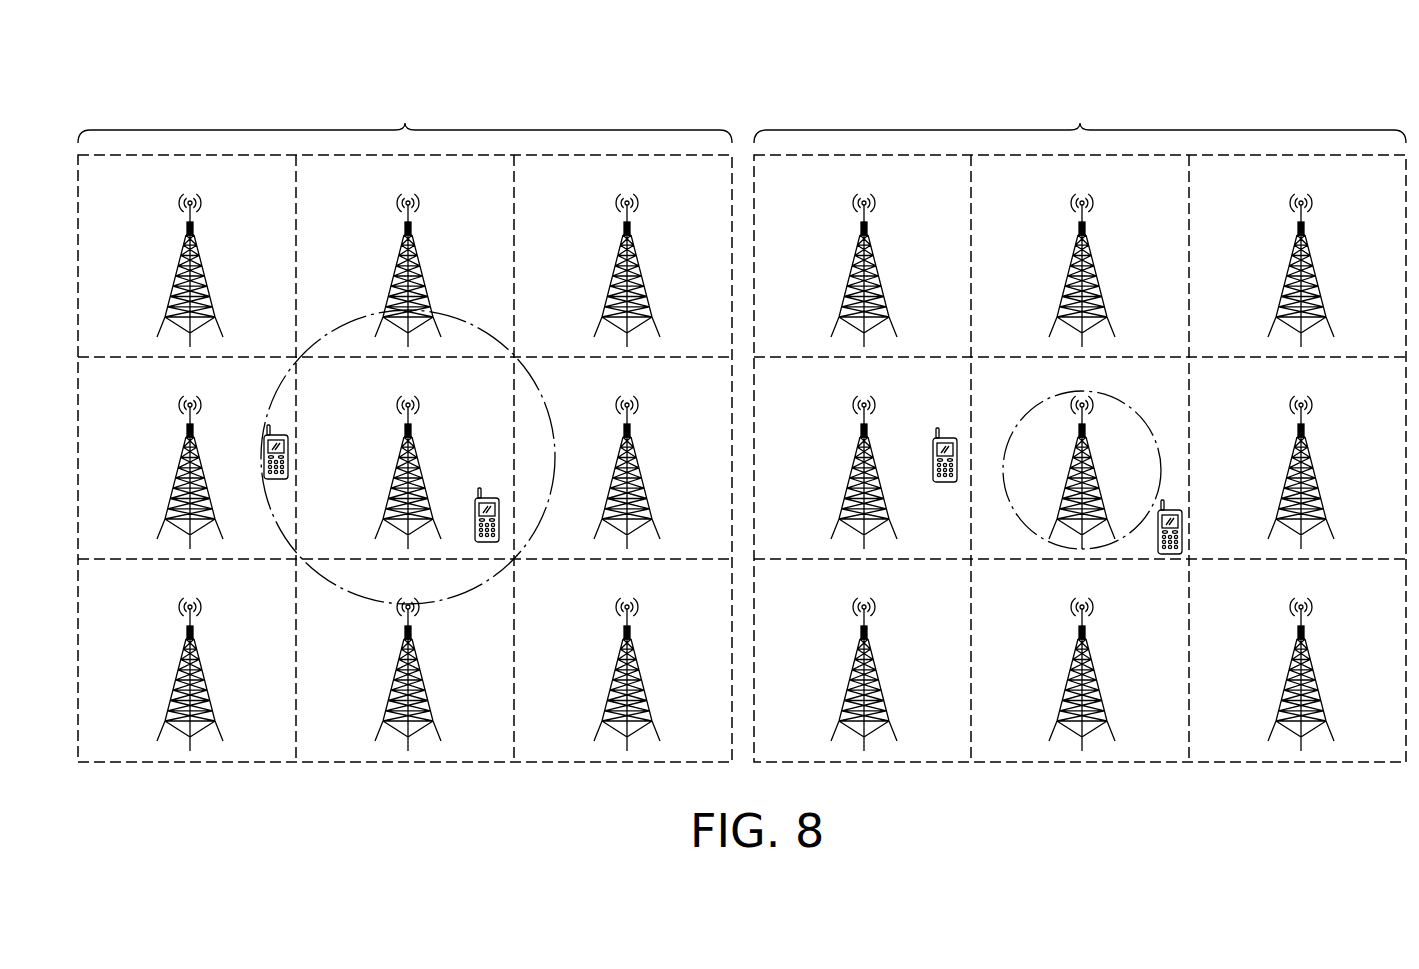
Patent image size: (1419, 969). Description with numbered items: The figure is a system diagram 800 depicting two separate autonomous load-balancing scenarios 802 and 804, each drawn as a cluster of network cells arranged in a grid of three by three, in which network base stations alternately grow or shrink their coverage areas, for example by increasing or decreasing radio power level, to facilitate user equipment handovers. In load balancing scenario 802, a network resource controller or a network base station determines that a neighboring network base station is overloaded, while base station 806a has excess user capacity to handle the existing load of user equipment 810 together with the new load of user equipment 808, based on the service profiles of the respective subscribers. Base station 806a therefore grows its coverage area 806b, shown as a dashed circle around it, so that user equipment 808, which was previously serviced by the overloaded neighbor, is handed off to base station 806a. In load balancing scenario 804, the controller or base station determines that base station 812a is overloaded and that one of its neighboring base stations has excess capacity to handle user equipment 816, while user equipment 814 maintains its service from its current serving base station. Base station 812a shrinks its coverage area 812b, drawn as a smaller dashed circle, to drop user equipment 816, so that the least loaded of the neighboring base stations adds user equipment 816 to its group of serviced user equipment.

The system diagram 800 is at (243, 87).
The load balancing scenario 802 is at (405, 431).
The load balancing scenario 804 is at (1080, 431).
The base station 806a is at (388, 488).
The coverage area 806b is at (487, 332).
The user equipment 808 is at (288, 455).
The user equipment 810 is at (490, 493).
The base station 812a is at (1102, 492).
The coverage area 812b is at (1107, 392).
The user equipment 814 is at (950, 430).
The user equipment 816 is at (1182, 530).